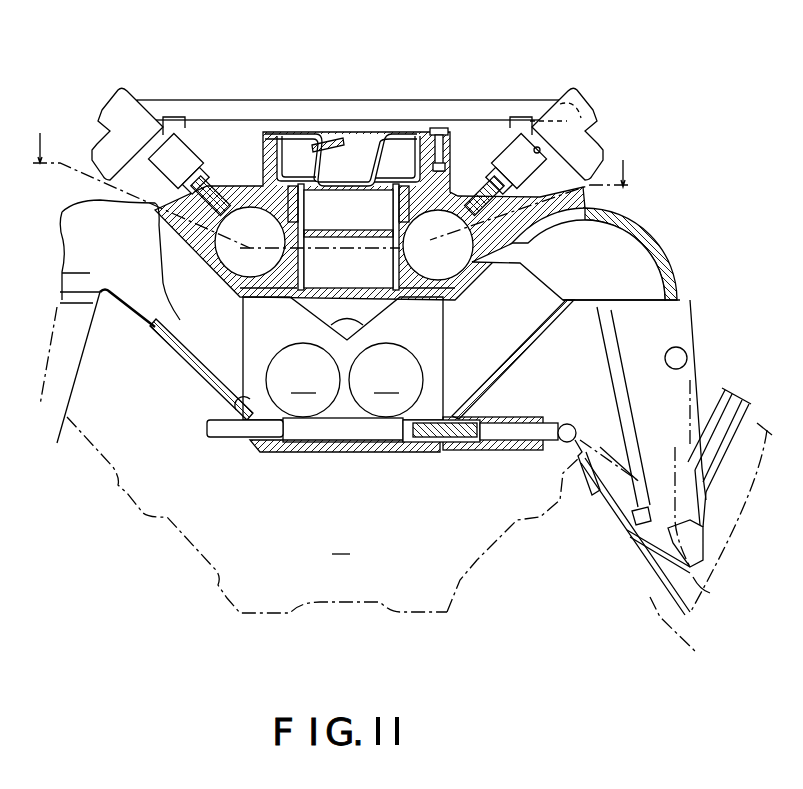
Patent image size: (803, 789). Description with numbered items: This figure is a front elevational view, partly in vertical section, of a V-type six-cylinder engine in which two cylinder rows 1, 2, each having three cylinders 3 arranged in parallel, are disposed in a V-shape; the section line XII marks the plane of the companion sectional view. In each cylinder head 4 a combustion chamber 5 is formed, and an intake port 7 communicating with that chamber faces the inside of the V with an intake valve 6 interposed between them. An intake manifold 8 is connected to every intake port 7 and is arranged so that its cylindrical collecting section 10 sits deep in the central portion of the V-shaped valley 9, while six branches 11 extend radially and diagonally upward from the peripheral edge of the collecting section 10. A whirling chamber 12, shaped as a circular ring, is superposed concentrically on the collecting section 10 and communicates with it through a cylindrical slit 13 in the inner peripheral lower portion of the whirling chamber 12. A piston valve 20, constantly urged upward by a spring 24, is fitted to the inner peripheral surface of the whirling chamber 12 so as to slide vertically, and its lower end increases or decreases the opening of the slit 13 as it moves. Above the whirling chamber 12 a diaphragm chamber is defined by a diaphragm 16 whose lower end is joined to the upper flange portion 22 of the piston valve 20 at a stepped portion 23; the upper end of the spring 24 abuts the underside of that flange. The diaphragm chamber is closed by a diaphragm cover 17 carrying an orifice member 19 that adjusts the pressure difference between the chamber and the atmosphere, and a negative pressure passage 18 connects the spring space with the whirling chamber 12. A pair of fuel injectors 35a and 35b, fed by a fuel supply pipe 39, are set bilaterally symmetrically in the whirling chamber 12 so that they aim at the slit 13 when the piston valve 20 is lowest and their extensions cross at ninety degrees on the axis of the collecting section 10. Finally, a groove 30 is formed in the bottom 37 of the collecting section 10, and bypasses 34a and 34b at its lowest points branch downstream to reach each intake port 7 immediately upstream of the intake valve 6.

The cylinder row 1 is at (200, 550).
The cylinder row 2 is at (480, 557).
The cylinder 3 is at (681, 635).
The cylinder head 4 is at (733, 467).
The combustion chamber 5 is at (697, 587).
The intake valve 6 is at (670, 537).
The intake port 7 is at (672, 368).
The intake manifold 8 is at (648, 225).
The V-shaped valley 9 is at (340, 541).
The collecting section 10 is at (273, 333).
The branches 11 is at (167, 353).
The whirling chamber 12 is at (457, 268).
The cylindrical slit 13 is at (247, 293).
The diaphragm 16 is at (410, 150).
The diaphragm cover 17 is at (374, 160).
The negative pressure passage 18 is at (263, 195).
The orifice member 19 is at (333, 140).
The piston valve 20 is at (443, 300).
The upper flange portion 22 is at (293, 185).
The stepped portion 23 is at (263, 157).
The spring 24 is at (262, 168).
The groove 30 is at (327, 432).
The bypass 34a is at (233, 430).
The bypass 34b is at (468, 445).
The fuel injector 35a is at (198, 133).
The fuel injector 35b is at (507, 160).
The bottom 37 is at (238, 401).
The fuel supply pipe 39 is at (447, 108).
The section line XII- XII is at (334, 179).